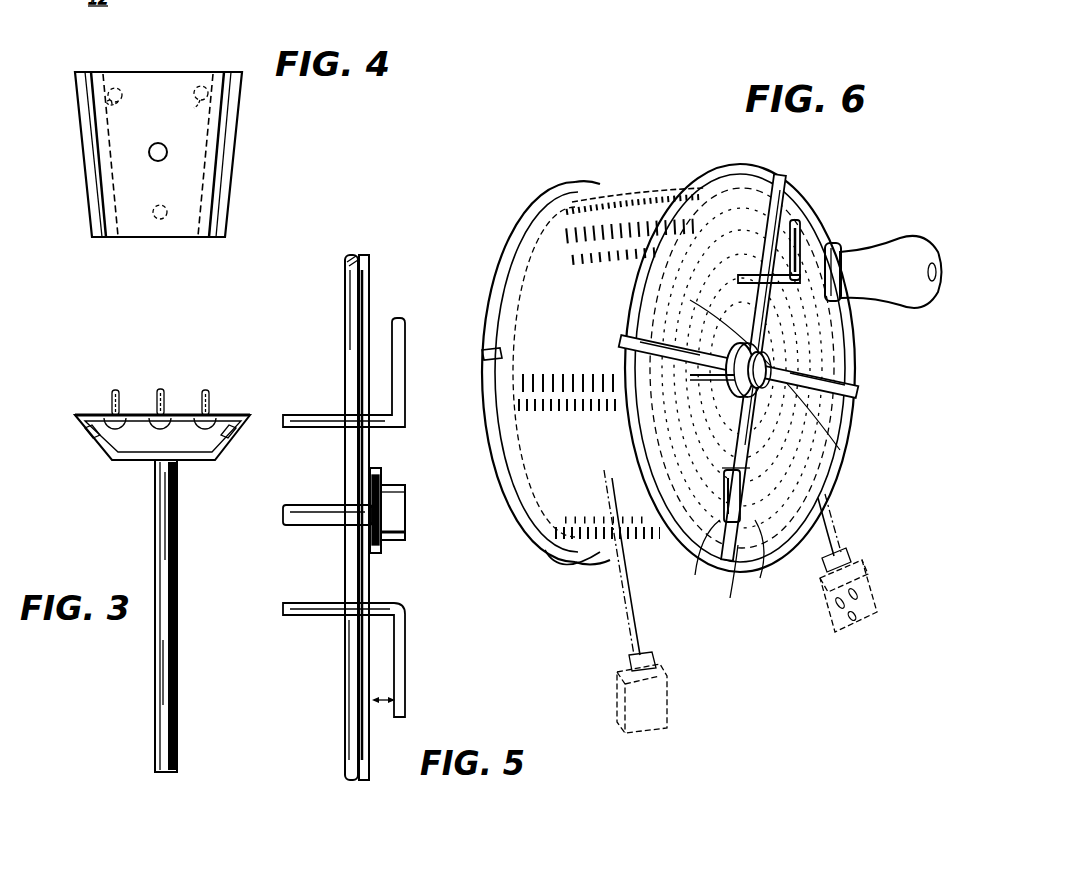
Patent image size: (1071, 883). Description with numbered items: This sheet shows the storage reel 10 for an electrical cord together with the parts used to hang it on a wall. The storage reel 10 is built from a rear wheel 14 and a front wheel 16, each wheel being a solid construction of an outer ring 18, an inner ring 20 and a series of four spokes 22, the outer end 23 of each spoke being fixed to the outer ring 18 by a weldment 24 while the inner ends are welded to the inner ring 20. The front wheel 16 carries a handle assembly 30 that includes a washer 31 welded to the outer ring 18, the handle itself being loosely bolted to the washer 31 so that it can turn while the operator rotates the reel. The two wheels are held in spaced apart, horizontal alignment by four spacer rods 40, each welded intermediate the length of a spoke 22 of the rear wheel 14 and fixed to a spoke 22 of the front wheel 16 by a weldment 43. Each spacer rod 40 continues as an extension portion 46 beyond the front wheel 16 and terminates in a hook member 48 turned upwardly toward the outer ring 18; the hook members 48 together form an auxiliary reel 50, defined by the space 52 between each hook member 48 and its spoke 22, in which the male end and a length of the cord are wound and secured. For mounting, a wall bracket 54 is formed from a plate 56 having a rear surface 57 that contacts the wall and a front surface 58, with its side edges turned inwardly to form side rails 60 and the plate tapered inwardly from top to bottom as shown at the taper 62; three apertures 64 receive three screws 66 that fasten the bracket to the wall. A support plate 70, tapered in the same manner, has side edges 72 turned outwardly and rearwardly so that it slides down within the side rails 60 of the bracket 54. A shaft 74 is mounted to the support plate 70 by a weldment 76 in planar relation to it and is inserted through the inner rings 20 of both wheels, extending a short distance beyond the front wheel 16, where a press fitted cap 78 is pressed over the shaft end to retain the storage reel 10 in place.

In FIG. 6, the storage reel 10 is at (651, 156).
In FIG. 6, the rear wheel 14 is at (566, 182).
In FIG. 5, the front wheel 16 is at (346, 274).
In FIG. 6, the front wheel 16 is at (742, 164).
In FIG. 5, the outer ring 18 is at (347, 742).
In FIG. 6, the outer ring 18 is at (842, 465).
In FIG. 5, the inner ring 20 is at (383, 555).
In FIG. 6, the inner ring 20 is at (725, 345).
In FIG. 6, the spokes 22 is at (486, 348).
In FIG. 5, the outer end 23 is at (368, 258).
In FIG. 5, the weldment 24 is at (357, 256).
In FIG. 6, the handle assembly 30 is at (932, 237).
In FIG. 6, the washer 31 is at (840, 262).
In FIG. 5, the spacer rods 40 is at (325, 414).
In FIG. 6, the spacer rods 40 is at (758, 270).
In FIG. 5, the weldment 43 is at (378, 428).
In FIG. 5, the extension portion 46 is at (434, 650).
In FIG. 6, the hook member 48 is at (802, 235).
In FIG. 5, the auxiliary reel 50 is at (388, 676).
In FIG. 6, the auxiliary reel 50 is at (760, 560).
In FIG. 5, the space 52 is at (386, 702).
In FIG. 6, the space 52 is at (723, 576).
In FIG. 4, the wall bracket 54 is at (214, 68).
In FIG. 3, the wall bracket 54 is at (232, 372).
In FIG. 4, the plate 56 is at (140, 80).
In FIG. 3, the plate 56 is at (140, 412).
In FIG. 3, the rear surface 57 is at (183, 410).
In FIG. 3, the front surface 58 is at (120, 458).
In FIG. 4, the side rails 60 is at (90, 180).
In FIG. 3, the side rails 60 is at (85, 432).
In FIG. 4, the taper 62 is at (230, 208).
In FIG. 4, the apertures 64 is at (92, 112).
In FIG. 3, the screws 66 is at (108, 416).
In FIG. 3, the support plate 70 is at (135, 464).
In FIG. 3, the side edges 72 is at (100, 445).
In FIG. 4, the shaft 74 is at (164, 143).
In FIG. 3, the shaft 74 is at (155, 676).
In FIG. 5, the shaft 74 is at (302, 528).
In FIG. 3, the weldment 76 is at (178, 464).
In FIG. 5, the press fitted cap 78 is at (398, 505).
In FIG. 6, the press fitted cap 78 is at (752, 372).